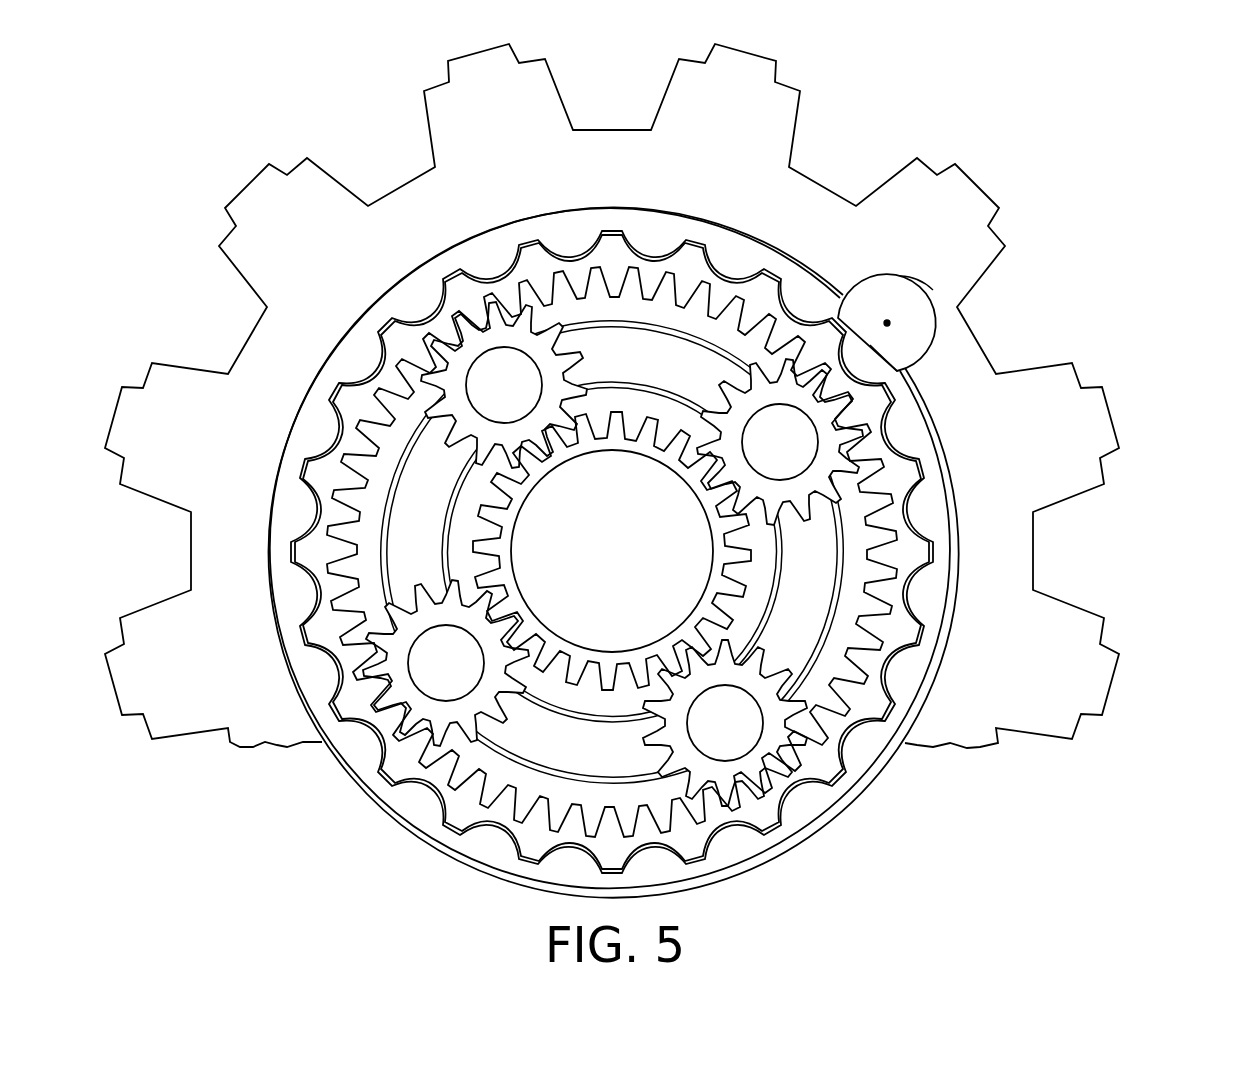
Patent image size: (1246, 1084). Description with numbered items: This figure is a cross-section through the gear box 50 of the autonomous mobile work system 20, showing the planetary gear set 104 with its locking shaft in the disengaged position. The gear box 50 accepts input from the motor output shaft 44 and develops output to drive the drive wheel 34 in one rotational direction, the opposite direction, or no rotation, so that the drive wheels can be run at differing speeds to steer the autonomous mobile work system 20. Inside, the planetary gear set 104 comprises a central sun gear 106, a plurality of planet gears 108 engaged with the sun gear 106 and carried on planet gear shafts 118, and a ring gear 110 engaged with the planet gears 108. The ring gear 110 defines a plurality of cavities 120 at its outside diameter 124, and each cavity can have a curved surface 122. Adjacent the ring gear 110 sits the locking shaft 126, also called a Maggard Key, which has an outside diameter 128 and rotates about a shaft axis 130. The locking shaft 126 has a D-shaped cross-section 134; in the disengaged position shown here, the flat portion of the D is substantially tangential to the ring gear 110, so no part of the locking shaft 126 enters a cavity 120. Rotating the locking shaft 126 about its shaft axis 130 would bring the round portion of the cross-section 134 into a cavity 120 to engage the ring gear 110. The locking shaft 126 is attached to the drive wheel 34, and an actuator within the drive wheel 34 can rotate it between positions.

The autonomous mobile work system 20 is at (1152, 150).
The drive wheel 34 is at (402, 178).
The motor output shaft 44 is at (617, 655).
The gear box 50 is at (845, 170).
The planetary gear set 104 is at (960, 358).
The sun gear 106 is at (757, 558).
The planet gears 108 is at (707, 400).
The ring gear 110 is at (380, 365).
The planet gear shafts 118 is at (790, 490).
The cavities 120 is at (318, 425).
The curved surface 122 is at (500, 268).
The outside diameter 124 is at (300, 465).
The locking shaft 126 is at (892, 290).
The outside diameter 128 is at (933, 287).
The shaft axis 130 is at (887, 322).
The cross-section 134 is at (910, 367).